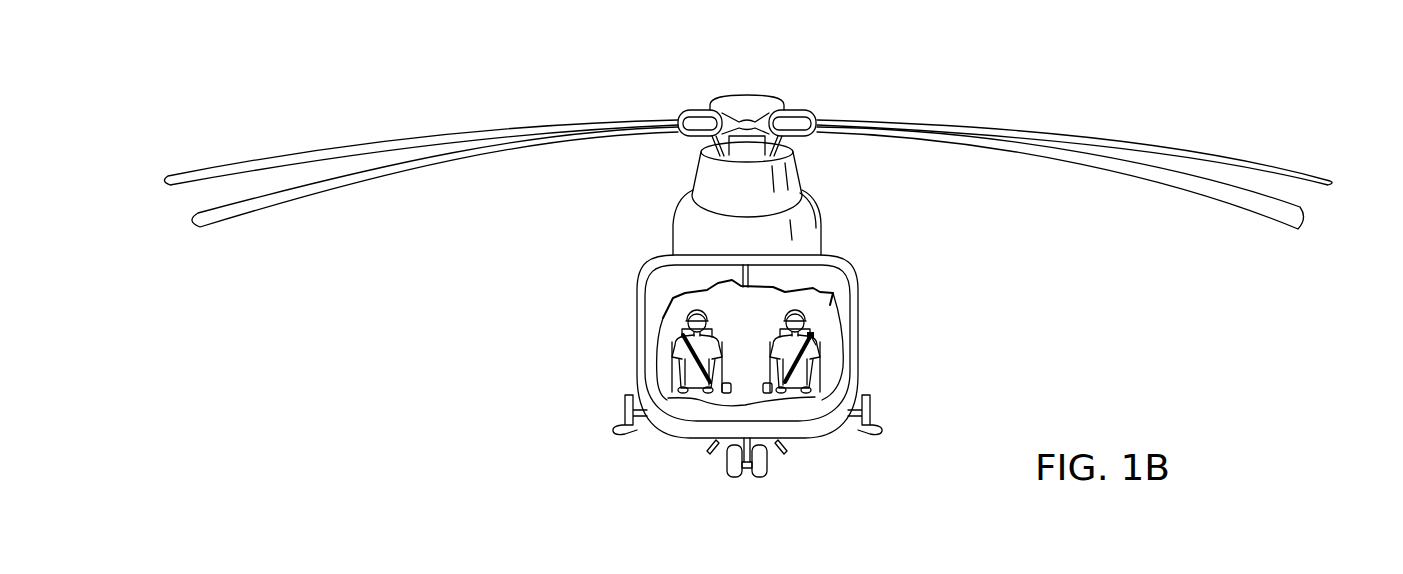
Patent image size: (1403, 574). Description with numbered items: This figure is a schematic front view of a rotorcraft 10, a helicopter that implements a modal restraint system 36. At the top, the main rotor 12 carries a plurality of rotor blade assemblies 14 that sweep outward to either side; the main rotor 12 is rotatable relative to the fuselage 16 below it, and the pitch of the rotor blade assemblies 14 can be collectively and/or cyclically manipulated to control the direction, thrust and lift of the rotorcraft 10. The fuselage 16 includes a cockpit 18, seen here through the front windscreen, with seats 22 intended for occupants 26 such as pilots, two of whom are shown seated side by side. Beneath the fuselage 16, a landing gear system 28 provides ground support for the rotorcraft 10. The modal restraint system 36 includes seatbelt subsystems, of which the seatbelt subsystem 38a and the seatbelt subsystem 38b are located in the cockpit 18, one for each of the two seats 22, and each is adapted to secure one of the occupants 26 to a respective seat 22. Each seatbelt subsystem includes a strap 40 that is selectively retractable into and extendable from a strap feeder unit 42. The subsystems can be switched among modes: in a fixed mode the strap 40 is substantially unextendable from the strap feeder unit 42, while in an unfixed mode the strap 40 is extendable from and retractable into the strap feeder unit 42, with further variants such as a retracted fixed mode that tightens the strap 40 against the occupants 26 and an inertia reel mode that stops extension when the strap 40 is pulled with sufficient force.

The rotorcraft 10 is at (590, 64).
The main rotor 12 is at (732, 97).
The rotor blade assemblies 14 is at (1123, 138).
The fuselage 16 is at (678, 438).
The cockpit 18 is at (818, 292).
The seats 22 is at (786, 324).
The occupants 26 is at (695, 312).
The landing gear system 28 is at (767, 466).
The modal restraint system 36 is at (818, 319).
The seatbelt subsystem 38a is at (686, 347).
The seatbelt subsystem 38b is at (788, 373).
The strap 40 is at (876, 365).
The strap feeder unit 42 is at (832, 336).